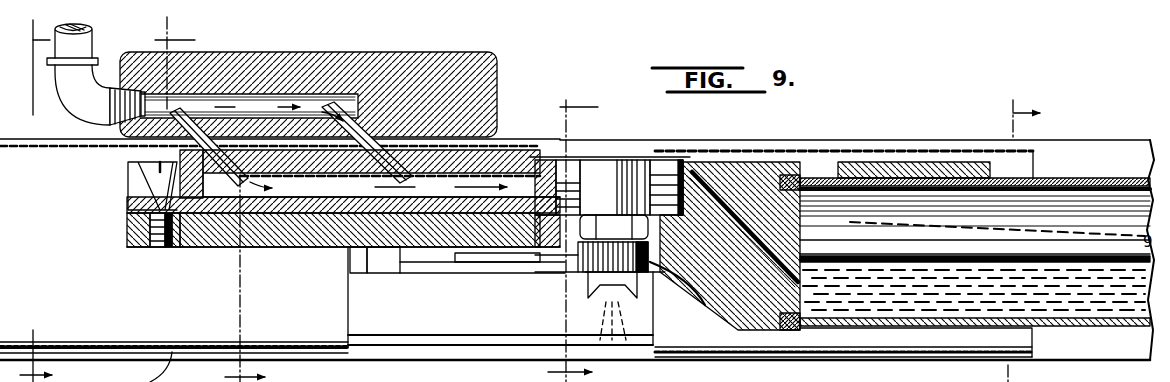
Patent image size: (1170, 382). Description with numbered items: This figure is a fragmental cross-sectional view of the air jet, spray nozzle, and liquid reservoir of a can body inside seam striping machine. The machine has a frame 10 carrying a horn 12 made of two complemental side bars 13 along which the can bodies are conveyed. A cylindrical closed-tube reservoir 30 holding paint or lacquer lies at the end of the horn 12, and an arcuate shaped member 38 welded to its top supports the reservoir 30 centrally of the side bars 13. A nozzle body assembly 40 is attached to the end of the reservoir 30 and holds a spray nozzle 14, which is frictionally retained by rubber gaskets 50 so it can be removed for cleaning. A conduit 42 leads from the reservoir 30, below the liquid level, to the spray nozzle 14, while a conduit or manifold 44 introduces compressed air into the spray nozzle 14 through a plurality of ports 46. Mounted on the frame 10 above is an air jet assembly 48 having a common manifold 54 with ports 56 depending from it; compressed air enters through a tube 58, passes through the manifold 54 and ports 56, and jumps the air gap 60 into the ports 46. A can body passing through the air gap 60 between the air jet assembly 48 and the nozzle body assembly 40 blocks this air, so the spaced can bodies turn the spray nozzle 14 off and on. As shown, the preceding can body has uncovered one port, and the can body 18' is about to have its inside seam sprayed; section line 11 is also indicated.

The frame 10 is at (28, 201).
The section line 11- 11 is at (210, 198).
The horn 12 is at (573, 233).
The side bars 13 is at (1015, 241).
The spray nozzle 14 is at (607, 185).
The can body 18' is at (844, 145).
The reservoir 30 is at (818, 178).
The arcuate shaped member 38 is at (867, 162).
The nozzle body assembly 40 is at (512, 153).
The conduit 42 is at (737, 248).
The conduit or manifold 44 is at (300, 200).
The ports 46 is at (200, 182).
The air jet assembly 48 is at (441, 50).
The rubber gaskets 50 is at (538, 160).
The common manifold 54 is at (246, 94).
The ports 56 is at (204, 110).
The tube 58 is at (93, 50).
The air gap 60 is at (381, 169).